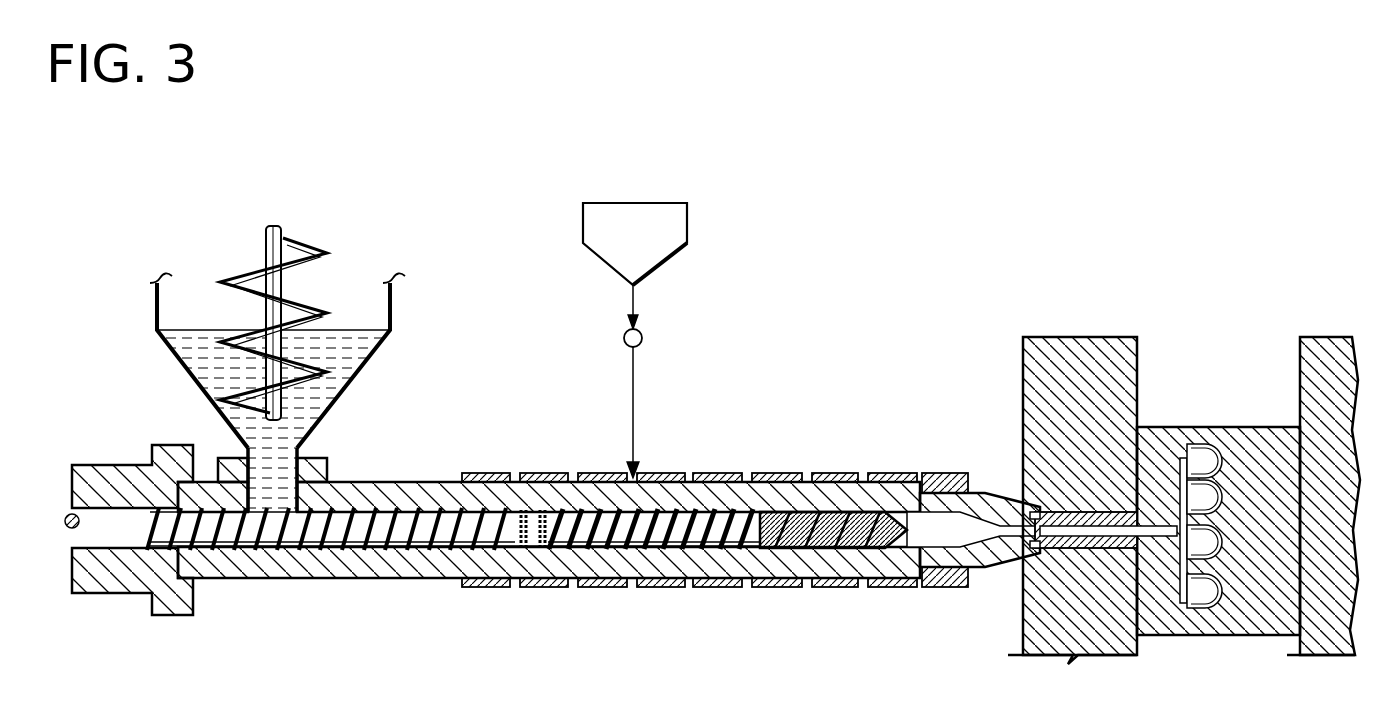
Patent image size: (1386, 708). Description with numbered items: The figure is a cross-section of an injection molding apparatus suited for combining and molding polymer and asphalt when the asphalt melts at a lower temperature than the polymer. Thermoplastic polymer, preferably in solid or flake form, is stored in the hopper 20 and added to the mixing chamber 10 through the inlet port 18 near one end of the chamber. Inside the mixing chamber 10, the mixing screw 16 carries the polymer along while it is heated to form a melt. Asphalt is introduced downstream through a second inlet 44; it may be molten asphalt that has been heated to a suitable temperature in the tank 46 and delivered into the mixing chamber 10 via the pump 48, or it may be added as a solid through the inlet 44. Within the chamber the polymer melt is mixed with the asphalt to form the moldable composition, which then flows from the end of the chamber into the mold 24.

The mixing chamber 10 is at (947, 640).
The mixing screw 16 is at (556, 510).
The inlet port 18 is at (305, 440).
The hopper 20 is at (392, 303).
The mold 24 is at (1201, 427).
The second inlet 44 is at (636, 478).
The tank 46 is at (687, 218).
The pump 48 is at (642, 334).